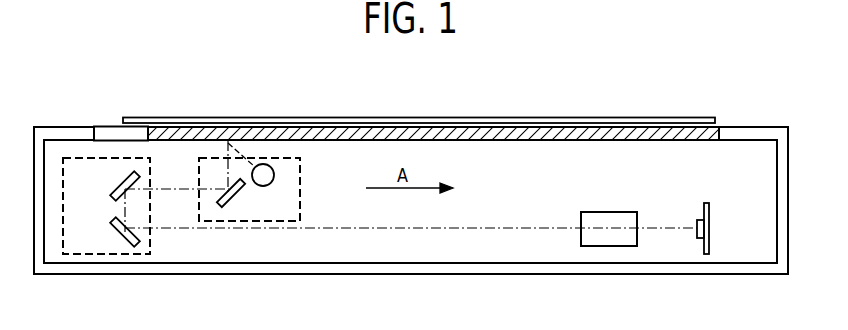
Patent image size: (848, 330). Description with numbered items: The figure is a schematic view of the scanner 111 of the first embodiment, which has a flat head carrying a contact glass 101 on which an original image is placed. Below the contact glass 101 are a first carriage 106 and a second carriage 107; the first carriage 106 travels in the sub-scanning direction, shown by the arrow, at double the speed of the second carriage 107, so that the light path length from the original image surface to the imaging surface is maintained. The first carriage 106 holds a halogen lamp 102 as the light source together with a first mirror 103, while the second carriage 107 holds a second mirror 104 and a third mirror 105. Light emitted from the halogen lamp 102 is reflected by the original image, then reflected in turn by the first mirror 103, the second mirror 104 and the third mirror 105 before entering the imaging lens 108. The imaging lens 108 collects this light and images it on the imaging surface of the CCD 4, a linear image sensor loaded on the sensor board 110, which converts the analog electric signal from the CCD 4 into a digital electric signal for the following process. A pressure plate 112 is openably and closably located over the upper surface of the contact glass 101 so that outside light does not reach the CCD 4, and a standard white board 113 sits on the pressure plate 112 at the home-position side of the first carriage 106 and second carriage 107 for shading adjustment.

The contact glass 101 is at (487, 143).
The halogen lamp 102 is at (275, 175).
The first mirror 103 is at (240, 196).
The second mirror 104 is at (113, 184).
The third mirror 105 is at (112, 237).
The first carriage 106 is at (300, 205).
The second carriage 107 is at (150, 243).
The imaging lens 108 is at (608, 212).
The sensor board 110 is at (708, 203).
The scanner 111 is at (753, 127).
The pressure plate 112 is at (608, 118).
The standard white board 113 is at (107, 127).
The CCD 4 is at (697, 222).